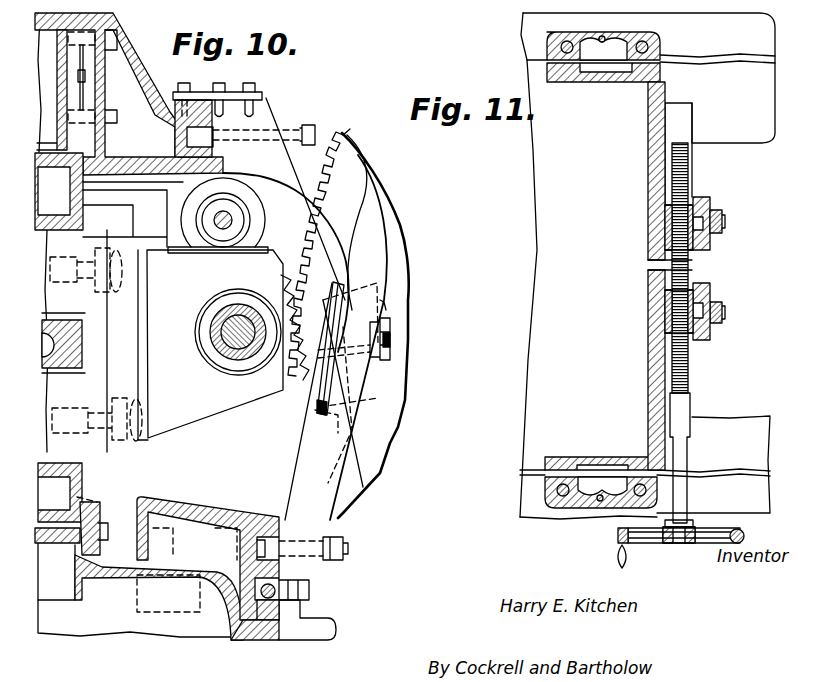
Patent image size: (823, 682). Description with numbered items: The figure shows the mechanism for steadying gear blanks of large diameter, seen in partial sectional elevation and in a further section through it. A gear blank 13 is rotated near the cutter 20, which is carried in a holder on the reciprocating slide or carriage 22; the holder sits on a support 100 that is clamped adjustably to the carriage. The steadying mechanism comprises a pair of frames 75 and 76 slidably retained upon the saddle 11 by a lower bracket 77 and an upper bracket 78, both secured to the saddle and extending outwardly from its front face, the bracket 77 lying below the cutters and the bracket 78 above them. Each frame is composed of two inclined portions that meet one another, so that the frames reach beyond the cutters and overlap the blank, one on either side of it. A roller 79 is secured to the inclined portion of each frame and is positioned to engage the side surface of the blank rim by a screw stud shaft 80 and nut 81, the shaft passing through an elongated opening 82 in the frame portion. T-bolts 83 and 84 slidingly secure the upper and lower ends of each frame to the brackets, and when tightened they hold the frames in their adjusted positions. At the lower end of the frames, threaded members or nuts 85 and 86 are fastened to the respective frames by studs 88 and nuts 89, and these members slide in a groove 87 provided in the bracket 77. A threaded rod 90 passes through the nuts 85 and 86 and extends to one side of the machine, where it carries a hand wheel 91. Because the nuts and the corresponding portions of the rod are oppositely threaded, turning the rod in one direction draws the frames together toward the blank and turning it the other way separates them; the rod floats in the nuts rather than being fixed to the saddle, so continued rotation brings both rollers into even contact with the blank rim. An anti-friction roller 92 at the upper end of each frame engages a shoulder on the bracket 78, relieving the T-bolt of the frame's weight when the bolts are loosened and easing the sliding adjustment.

In FIG. 10, the saddle 11 is at (116, 594).
In FIG. 11, the saddle 11 is at (535, 400).
In FIG. 10, the gear blank 13 is at (358, 168).
In FIG. 10, the cutter 20 is at (288, 302).
In FIG. 10, the reciprocating slide or carriage 22 is at (68, 216).
In FIG. 10, the frame 75 is at (365, 250).
In FIG. 11, the frame 75 is at (707, 292).
In FIG. 11, the frame 76 is at (707, 200).
In FIG. 10, the bracket 77 is at (215, 514).
In FIG. 11, the bracket 77 is at (660, 363).
In FIG. 10, the bracket 78 is at (126, 67).
In FIG. 10, the roller 79 is at (317, 370).
In FIG. 10, the screw stud shaft 80 is at (384, 306).
In FIG. 10, the nut 81 is at (390, 343).
In FIG. 10, the elongated opening 82 is at (350, 397).
In FIG. 10, the T-bolt 83 is at (270, 136).
In FIG. 10, the T-bolt 84 is at (325, 538).
In FIG. 10, the threaded member 85 is at (275, 622).
In FIG. 11, the threaded member 85 is at (667, 307).
In FIG. 11, the threaded member 86 is at (667, 222).
In FIG. 10, the groove 87 is at (248, 637).
In FIG. 11, the groove 87 is at (670, 133).
In FIG. 10, the stud 88 is at (297, 640).
In FIG. 11, the stud 88 is at (725, 222).
In FIG. 10, the nut 89 is at (309, 598).
In FIG. 11, the nut 89 is at (722, 213).
In FIG. 10, the threaded rod 90 is at (278, 588).
In FIG. 11, the threaded rod 90 is at (688, 378).
In FIG. 11, the hand wheel 91 is at (618, 538).
In FIG. 10, the anti-friction roller 92 is at (184, 106).
In FIG. 10, the support 100 is at (118, 230).